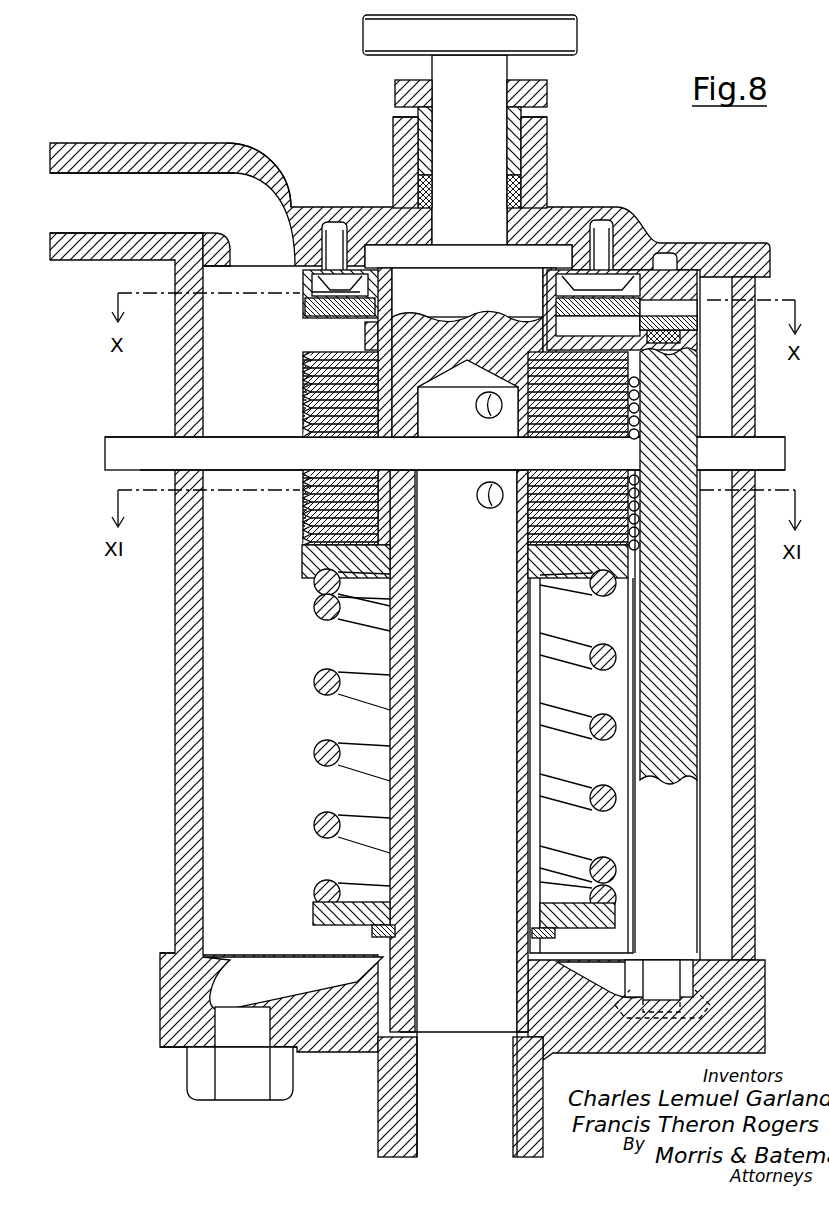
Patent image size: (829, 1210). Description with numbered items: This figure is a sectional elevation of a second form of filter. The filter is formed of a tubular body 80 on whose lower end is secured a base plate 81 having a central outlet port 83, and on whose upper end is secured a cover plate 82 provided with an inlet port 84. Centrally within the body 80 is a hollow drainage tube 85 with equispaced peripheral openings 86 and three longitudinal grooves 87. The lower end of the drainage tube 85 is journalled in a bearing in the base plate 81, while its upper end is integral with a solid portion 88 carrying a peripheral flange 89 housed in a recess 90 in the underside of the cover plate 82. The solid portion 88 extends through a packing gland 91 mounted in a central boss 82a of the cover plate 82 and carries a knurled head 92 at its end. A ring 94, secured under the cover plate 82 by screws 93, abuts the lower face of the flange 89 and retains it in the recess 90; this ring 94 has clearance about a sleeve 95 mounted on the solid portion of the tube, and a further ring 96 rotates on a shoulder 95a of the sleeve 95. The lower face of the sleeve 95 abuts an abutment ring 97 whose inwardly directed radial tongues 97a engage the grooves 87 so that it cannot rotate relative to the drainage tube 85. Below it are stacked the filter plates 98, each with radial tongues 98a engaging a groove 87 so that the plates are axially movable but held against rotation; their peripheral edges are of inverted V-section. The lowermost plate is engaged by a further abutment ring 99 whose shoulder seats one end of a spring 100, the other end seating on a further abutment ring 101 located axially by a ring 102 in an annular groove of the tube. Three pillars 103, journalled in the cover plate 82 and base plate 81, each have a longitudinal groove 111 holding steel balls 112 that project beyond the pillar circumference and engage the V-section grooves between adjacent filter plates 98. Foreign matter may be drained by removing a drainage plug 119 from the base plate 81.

The tubular body 80 is at (188, 992).
The base plate 81 is at (228, 1000).
The cover plate 82 is at (233, 170).
The central boss 82a is at (549, 150).
The central outlet port 83 is at (413, 1118).
The inlet port 84 is at (142, 203).
The hollow drainage tube 85 is at (395, 655).
The openings 86 is at (486, 483).
The longitudinal grooves 87 is at (530, 685).
The solid portion 88 is at (480, 290).
The peripheral flange 89 is at (388, 255).
The recess 90 is at (553, 242).
The packing gland 91 is at (549, 92).
The knurled head 92 is at (580, 40).
The screws 93 is at (320, 245).
The ring 94 is at (297, 282).
The sleeve 95 is at (392, 295).
The shoulder 95a is at (365, 334).
The further ring 96 is at (297, 312).
The abutment ring 97 is at (303, 364).
The radial tongues 97a is at (545, 326).
The filter plates 98 is at (303, 530).
The radial tongues 98a is at (530, 545).
The further abutment ring 99 is at (302, 555).
The spring 100 is at (316, 680).
The further abutment ring 101 is at (310, 918).
The ring 102 is at (372, 930).
The pillars 103 is at (650, 833).
The longitudinal groove 111 is at (648, 755).
The steel balls 112 is at (634, 470).
The drainage plug 119 is at (247, 1080).